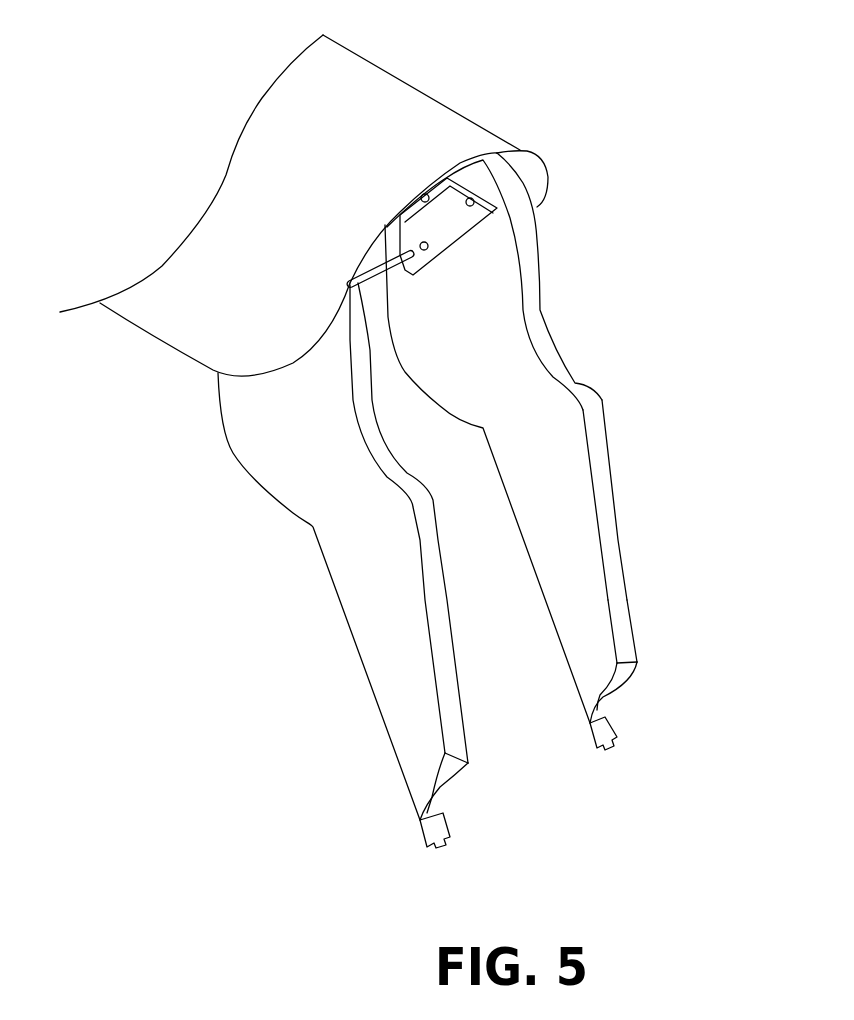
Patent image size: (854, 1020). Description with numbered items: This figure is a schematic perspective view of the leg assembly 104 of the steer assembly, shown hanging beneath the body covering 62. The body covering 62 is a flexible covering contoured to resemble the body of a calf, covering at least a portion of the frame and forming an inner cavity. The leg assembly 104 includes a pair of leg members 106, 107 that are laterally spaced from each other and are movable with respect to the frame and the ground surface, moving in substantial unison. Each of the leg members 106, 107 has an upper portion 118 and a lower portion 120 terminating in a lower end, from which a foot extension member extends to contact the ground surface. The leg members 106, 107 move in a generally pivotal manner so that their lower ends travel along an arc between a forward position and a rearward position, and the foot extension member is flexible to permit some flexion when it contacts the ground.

The body covering 62 is at (408, 127).
The leg assembly 104 is at (563, 835).
The leg member 106 is at (605, 502).
The leg member 107 is at (340, 545).
The upper portion 118 is at (503, 310).
The lower portion 120 is at (597, 648).